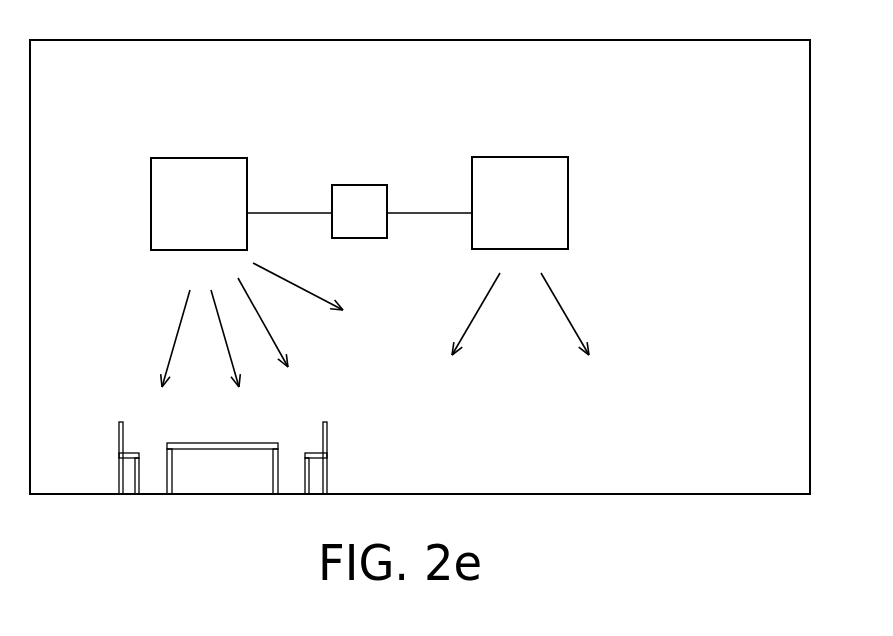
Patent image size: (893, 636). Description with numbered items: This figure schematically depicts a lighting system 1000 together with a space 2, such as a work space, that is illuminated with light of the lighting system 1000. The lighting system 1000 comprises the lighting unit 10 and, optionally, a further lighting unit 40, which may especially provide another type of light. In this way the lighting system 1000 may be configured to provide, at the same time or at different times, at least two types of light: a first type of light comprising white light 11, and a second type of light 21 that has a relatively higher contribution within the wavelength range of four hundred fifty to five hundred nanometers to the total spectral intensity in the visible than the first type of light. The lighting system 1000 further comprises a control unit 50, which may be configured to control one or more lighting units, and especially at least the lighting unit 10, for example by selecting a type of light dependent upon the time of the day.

The space 2 is at (800, 58).
The lighting unit 10 is at (229, 120).
The control unit 50 is at (364, 152).
The further lighting unit 40 is at (603, 131).
The lighting system 1000 is at (433, 120).
The white light 11 is at (172, 348).
The second type of light 21 is at (292, 300).